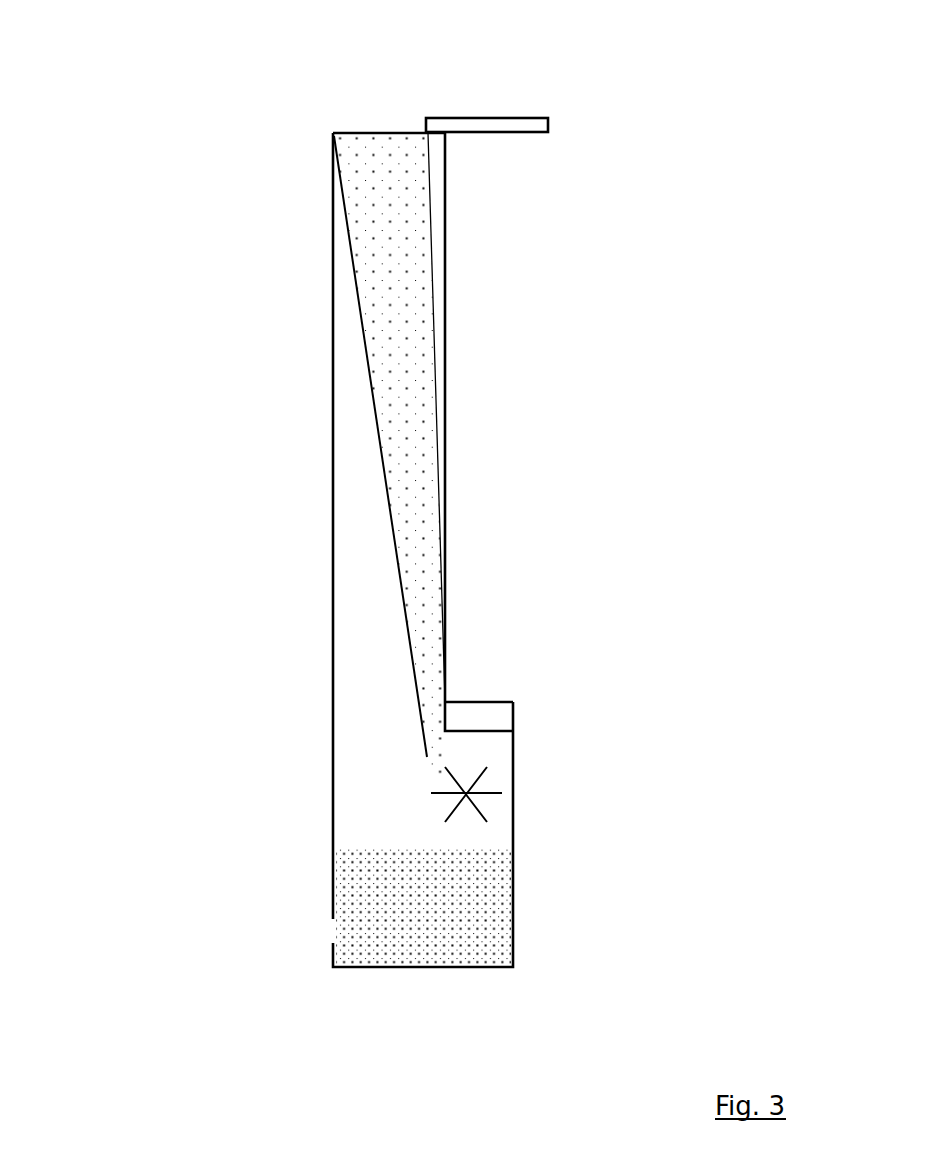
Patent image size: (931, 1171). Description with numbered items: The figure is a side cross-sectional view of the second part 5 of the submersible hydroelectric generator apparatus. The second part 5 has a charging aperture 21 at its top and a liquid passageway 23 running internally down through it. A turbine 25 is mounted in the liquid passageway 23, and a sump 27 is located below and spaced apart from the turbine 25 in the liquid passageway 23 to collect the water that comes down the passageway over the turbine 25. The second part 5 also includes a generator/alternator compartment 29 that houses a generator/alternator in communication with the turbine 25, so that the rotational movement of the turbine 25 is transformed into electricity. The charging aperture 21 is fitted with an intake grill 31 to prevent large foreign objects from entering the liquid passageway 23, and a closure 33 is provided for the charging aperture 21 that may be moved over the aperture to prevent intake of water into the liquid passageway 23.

The second part 5 is at (242, 190).
The charging aperture 21 is at (397, 130).
The liquid passageway 23 is at (403, 290).
The turbine 25 is at (485, 796).
The sump 27 is at (493, 899).
The generator/alternator compartment 29 is at (502, 712).
The intake grill 31 is at (340, 133).
The closure 33 is at (513, 115).